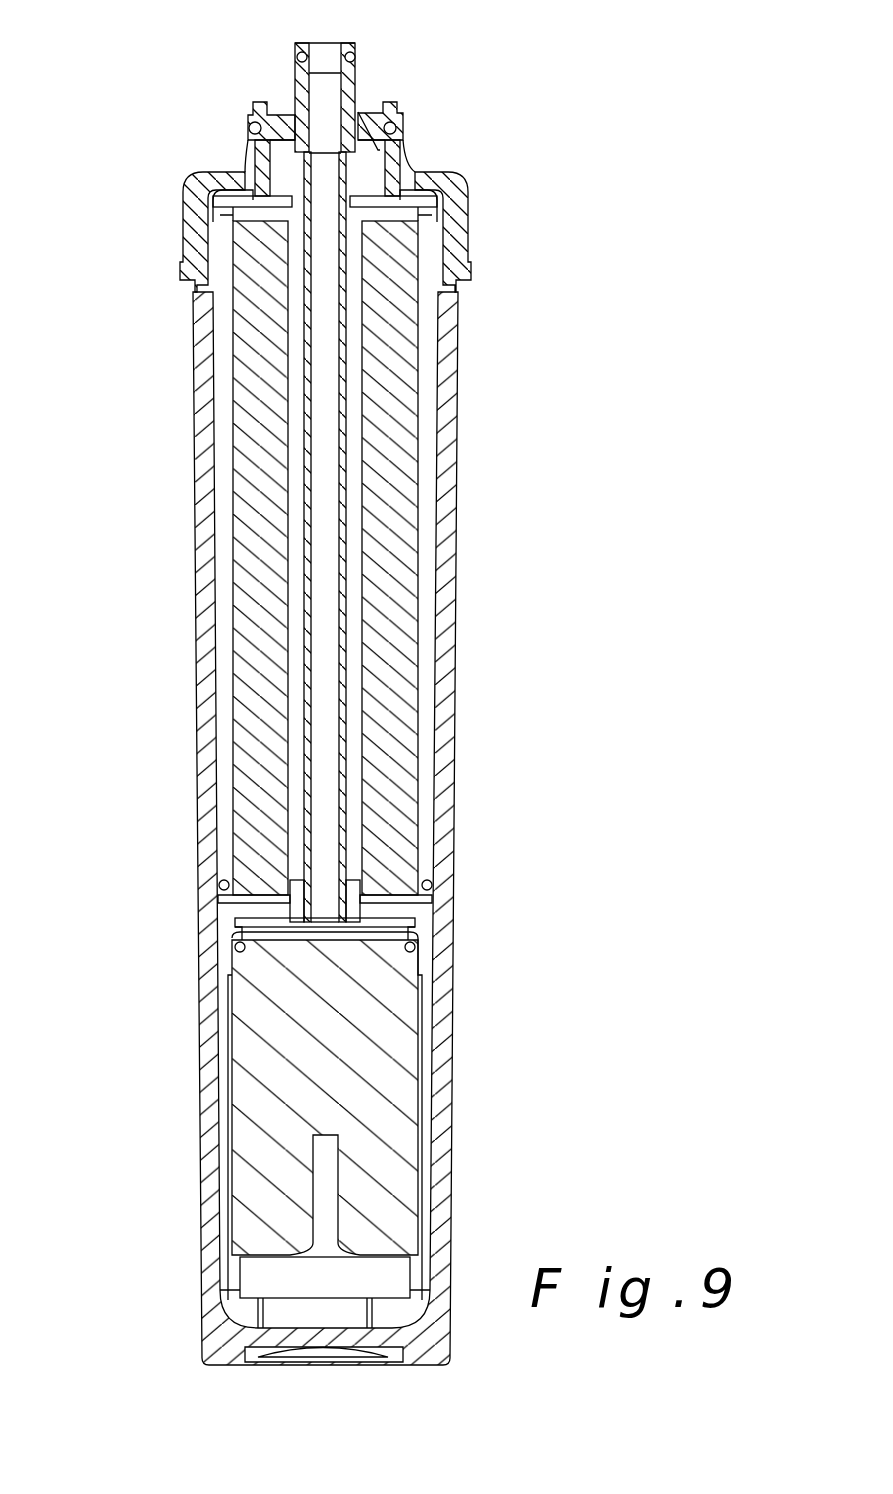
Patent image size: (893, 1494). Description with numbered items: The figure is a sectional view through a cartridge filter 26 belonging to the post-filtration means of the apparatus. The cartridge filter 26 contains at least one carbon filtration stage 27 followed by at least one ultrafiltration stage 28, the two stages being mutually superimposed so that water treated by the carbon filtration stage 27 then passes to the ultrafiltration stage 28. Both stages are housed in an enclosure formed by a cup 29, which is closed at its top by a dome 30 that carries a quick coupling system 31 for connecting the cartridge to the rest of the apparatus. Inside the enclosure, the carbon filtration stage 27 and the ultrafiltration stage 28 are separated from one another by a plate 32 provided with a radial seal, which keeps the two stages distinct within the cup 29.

The cartridge filter 26 is at (568, 292).
The carbon filtration stage 27 is at (392, 548).
The ultrafiltration stage 28 is at (368, 1103).
The cup 29 is at (445, 827).
The dome 30 is at (190, 208).
The quick coupling system 31 is at (395, 112).
The plate with a radial seal 32 is at (407, 902).